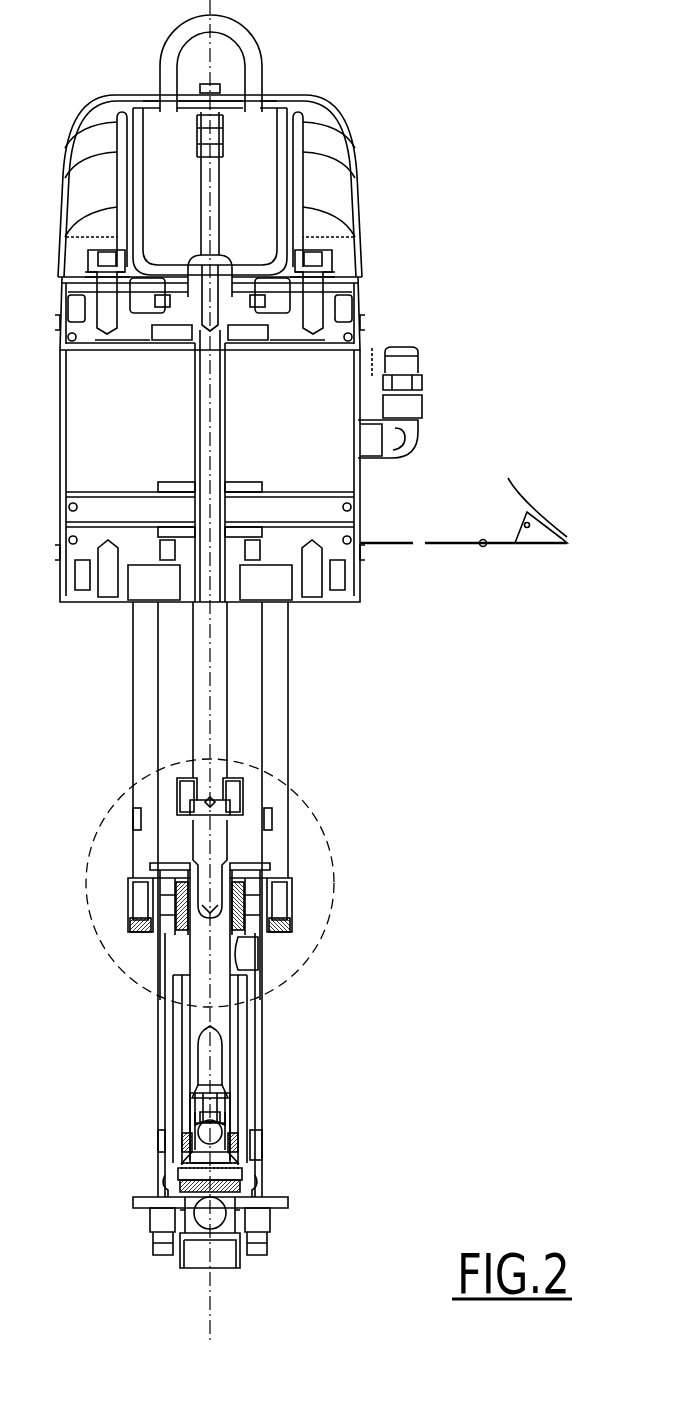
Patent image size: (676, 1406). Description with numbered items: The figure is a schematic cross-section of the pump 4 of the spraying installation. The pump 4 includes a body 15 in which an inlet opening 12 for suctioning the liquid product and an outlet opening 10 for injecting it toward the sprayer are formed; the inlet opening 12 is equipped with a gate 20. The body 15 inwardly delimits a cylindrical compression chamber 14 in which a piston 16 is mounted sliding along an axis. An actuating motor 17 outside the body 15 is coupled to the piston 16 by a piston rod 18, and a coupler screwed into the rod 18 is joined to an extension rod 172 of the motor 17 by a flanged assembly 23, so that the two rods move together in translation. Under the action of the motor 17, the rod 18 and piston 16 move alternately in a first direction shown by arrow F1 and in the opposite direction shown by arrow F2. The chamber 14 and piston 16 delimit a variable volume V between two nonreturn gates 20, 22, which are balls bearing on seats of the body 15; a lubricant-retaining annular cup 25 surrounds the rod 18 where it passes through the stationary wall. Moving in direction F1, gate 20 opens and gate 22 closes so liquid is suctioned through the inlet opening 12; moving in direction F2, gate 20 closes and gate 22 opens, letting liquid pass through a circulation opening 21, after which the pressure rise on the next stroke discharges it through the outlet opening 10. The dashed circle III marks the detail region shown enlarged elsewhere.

The pump 4 is at (396, 199).
The actuating motor 17 is at (380, 323).
The extension rod 172 is at (217, 720).
The flanged assembly 23 is at (188, 802).
The detail section III is at (313, 812).
The annular cup 25 is at (235, 862).
The outlet opening 10 is at (247, 935).
The piston rod 18 is at (202, 1022).
The body 15 is at (263, 1050).
The compression chamber 14 is at (188, 1098).
The variable volume V is at (262, 1100).
The circulation opening 21 is at (207, 1112).
The nonreturn gate 22 is at (213, 1132).
The piston 16 is at (233, 1162).
The nonreturn gate 20 is at (217, 1213).
The inlet opening 12 is at (228, 1272).
The arrow F1 is at (404, 893).
The arrow F2 is at (404, 986).